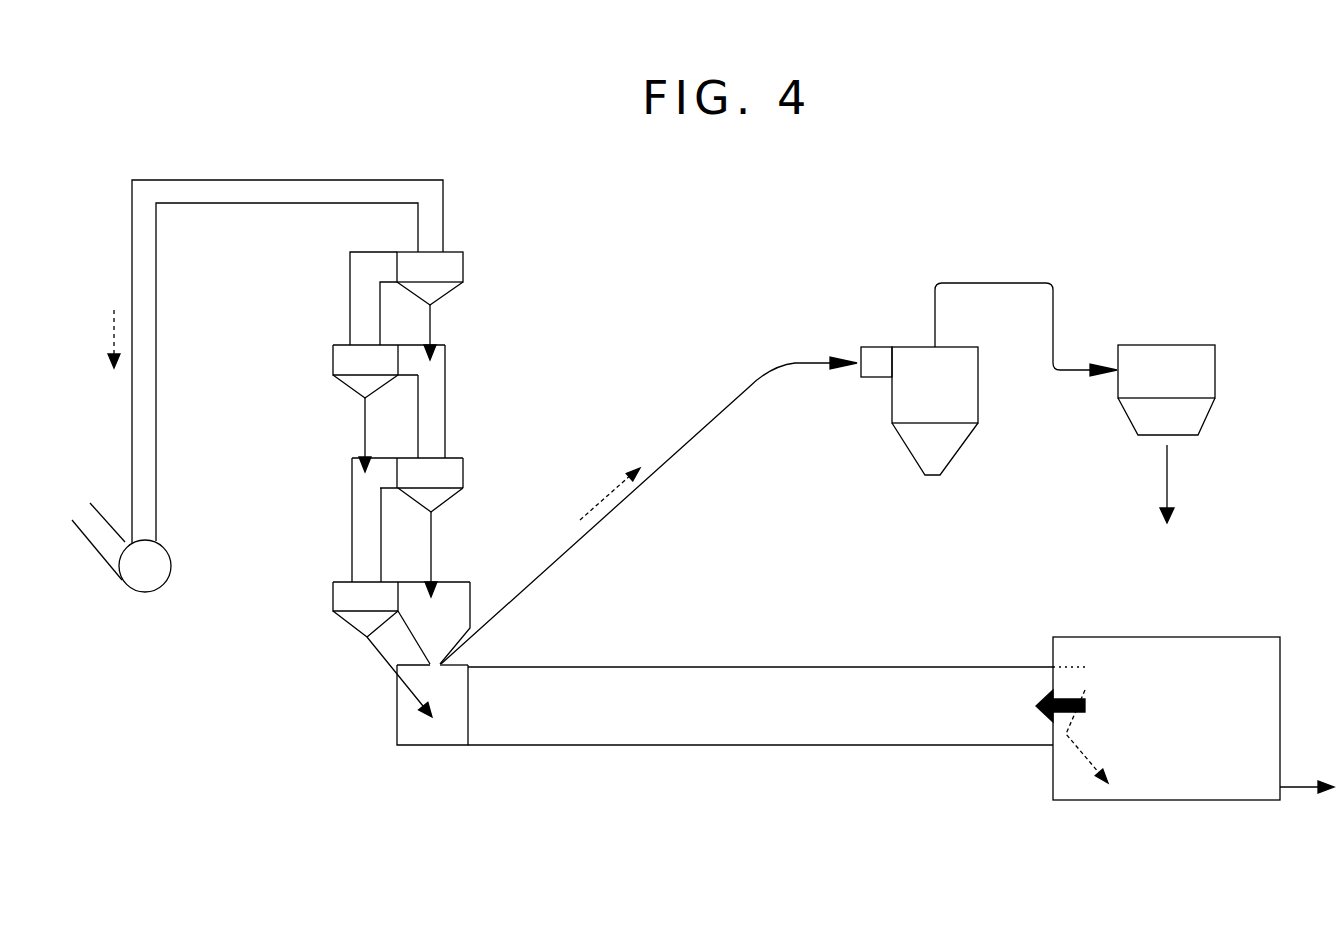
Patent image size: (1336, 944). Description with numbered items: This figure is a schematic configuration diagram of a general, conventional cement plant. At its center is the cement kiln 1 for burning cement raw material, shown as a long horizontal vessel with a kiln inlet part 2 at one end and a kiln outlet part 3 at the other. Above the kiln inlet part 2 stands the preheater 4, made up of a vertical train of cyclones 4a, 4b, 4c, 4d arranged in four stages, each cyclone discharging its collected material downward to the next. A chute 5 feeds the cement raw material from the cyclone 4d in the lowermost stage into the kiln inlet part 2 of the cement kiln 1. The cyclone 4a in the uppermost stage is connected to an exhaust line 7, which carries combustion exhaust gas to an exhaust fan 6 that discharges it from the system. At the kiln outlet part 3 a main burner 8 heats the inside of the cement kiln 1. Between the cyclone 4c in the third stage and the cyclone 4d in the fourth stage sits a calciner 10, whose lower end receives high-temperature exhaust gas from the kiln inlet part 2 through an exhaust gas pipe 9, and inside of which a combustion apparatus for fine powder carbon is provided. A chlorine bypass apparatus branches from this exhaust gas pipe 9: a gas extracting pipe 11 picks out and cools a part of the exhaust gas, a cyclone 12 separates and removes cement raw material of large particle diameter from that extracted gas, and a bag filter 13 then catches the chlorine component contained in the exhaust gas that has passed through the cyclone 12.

The cement kiln 1 is at (862, 682).
The kiln inlet part 2 is at (433, 746).
The kiln outlet part 3 is at (1052, 768).
The preheater 4 is at (483, 392).
The cyclone 4a is at (470, 268).
The cyclone 4b is at (333, 358).
The cyclone 4c is at (470, 468).
The cyclone 4d is at (333, 588).
The chute 5 is at (383, 665).
The exhaust fan 6 is at (135, 578).
The exhaust line 7 is at (245, 190).
The main burner 8 is at (1083, 692).
The exhaust gas pipe 9 is at (428, 663).
The calciner 10 is at (459, 597).
The gas extracting pipe 11 is at (597, 528).
The cyclone 12 is at (918, 357).
The bag filter 13 is at (1162, 357).